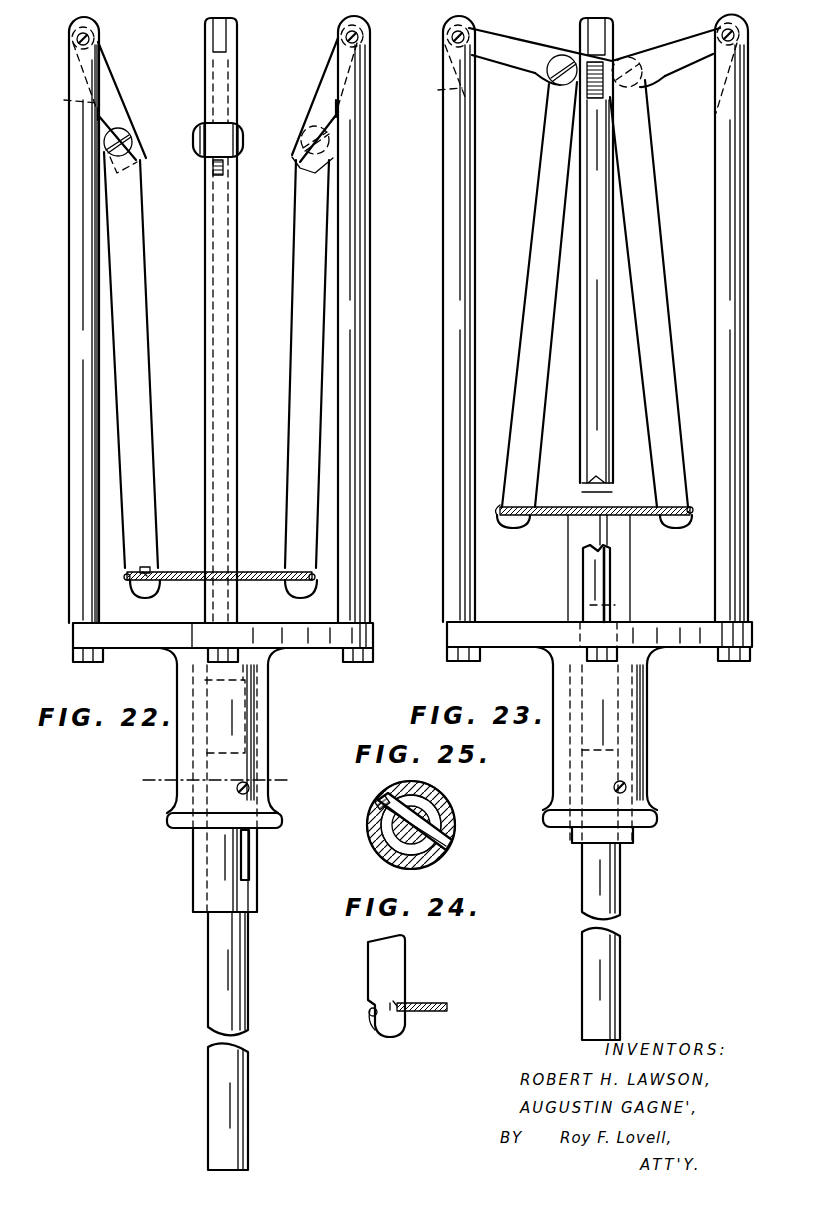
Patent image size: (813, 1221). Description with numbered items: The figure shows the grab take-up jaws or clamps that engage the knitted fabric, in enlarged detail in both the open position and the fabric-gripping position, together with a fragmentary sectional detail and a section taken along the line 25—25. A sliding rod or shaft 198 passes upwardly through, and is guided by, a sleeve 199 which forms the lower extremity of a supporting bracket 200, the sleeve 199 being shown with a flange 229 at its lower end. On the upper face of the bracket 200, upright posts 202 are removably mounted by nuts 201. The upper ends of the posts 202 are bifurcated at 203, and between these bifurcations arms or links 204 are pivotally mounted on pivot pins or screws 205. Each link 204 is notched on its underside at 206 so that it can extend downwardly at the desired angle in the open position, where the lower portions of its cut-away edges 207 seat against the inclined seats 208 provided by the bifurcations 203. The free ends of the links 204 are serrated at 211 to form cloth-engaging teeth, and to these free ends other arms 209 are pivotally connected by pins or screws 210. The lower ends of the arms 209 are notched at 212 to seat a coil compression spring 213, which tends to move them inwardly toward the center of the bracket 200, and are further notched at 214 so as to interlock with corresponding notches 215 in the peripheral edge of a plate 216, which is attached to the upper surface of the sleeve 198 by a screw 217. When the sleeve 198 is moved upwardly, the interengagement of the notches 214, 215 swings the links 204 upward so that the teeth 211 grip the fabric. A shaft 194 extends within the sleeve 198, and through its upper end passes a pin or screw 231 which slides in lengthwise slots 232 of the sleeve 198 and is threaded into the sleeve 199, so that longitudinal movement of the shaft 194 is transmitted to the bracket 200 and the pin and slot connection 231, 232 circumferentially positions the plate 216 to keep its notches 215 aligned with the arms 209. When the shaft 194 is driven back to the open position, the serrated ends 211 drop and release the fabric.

In FIG. 22, the shaft 194 is at (248, 967).
In FIG. 23, the shaft 194 is at (620, 887).
In FIG. 25, the shaft 194 is at (456, 817).
In FIG. 22, the sliding rod or shaft 198 is at (258, 893).
In FIG. 23, the sliding rod or shaft 198 is at (635, 840).
In FIG. 25, the sliding rod or shaft 198 is at (395, 832).
In FIG. 22, the sleeve 199 is at (268, 713).
In FIG. 23, the sleeve 199 is at (648, 713).
In FIG. 25, the sleeve 199 is at (430, 868).
In FIG. 22, the supporting bracket 200 is at (223, 635).
In FIG. 23, the supporting bracket 200 is at (599, 634).
In FIG. 22, the nuts 201 is at (90, 663).
In FIG. 23, the nuts 201 is at (735, 662).
In FIG. 22, the upright posts 202 is at (70, 378).
In FIG. 23, the upright posts 202 is at (443, 460).
In FIG. 22, the bifurcations 203 is at (220, 13).
In FIG. 23, the bifurcations 203 is at (598, 13).
In FIG. 22, the arms or links 204 is at (119, 90).
In FIG. 23, the arms or links 204 is at (594, 45).
In FIG. 22, the pivot pins or screws 205 is at (97, 42).
In FIG. 23, the pivot pins or screws 205 is at (450, 38).
In FIG. 22, the notches 206 is at (120, 115).
In FIG. 23, the notches 206 is at (531, 76).
In FIG. 22, the lower cut-away edges 207 is at (78, 78).
In FIG. 23, the lower cut-away edges 207 is at (488, 60).
In FIG. 22, the inclined seats 208 is at (66, 101).
In FIG. 23, the inclined seats 208 is at (433, 91).
In FIG. 22, the arms 209 is at (143, 270).
In FIG. 23, the arms 209 is at (527, 264).
In FIG. 24, the arms 209 is at (405, 960).
In FIG. 22, the pins or screws 210 is at (243, 138).
In FIG. 23, the pins or screws 210 is at (563, 56).
In FIG. 22, the serrations 211 is at (137, 168).
In FIG. 23, the serrations 211 is at (613, 100).
In FIG. 22, the notches 212 is at (313, 580).
In FIG. 23, the notches 212 is at (688, 505).
In FIG. 24, the notches 212 is at (370, 1025).
In FIG. 22, the coil compression spring 213 is at (128, 585).
In FIG. 23, the coil compression spring 213 is at (513, 526).
In FIG. 24, the coil compression spring 213 is at (369, 1012).
In FIG. 22, the notches 214 is at (148, 569).
In FIG. 24, the notches 214 is at (398, 995).
In FIG. 22, the notches 215 is at (143, 570).
In FIG. 24, the notches 215 is at (391, 1013).
In FIG. 22, the plate 216 is at (262, 571).
In FIG. 23, the plate 216 is at (563, 506).
In FIG. 24, the plate 216 is at (437, 1012).
In FIG. 23, the screw 217 is at (612, 490).
In FIG. 22, the flange 229 is at (182, 829).
In FIG. 23, the flange 229 is at (562, 828).
In FIG. 22, the pin or screw 231 is at (237, 790).
In FIG. 23, the pin or screw 231 is at (614, 789).
In FIG. 25, the pin or screw 231 is at (450, 846).
In FIG. 22, the slots 232 is at (248, 863).
In FIG. 23, the slots 232 is at (626, 603).
In FIG. 25, the slots 232 is at (382, 796).
In FIG. 22, the section line 25 is at (213, 778).